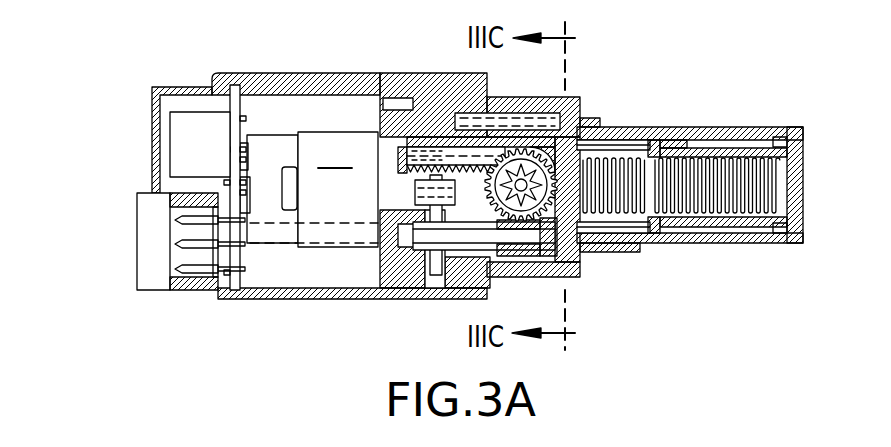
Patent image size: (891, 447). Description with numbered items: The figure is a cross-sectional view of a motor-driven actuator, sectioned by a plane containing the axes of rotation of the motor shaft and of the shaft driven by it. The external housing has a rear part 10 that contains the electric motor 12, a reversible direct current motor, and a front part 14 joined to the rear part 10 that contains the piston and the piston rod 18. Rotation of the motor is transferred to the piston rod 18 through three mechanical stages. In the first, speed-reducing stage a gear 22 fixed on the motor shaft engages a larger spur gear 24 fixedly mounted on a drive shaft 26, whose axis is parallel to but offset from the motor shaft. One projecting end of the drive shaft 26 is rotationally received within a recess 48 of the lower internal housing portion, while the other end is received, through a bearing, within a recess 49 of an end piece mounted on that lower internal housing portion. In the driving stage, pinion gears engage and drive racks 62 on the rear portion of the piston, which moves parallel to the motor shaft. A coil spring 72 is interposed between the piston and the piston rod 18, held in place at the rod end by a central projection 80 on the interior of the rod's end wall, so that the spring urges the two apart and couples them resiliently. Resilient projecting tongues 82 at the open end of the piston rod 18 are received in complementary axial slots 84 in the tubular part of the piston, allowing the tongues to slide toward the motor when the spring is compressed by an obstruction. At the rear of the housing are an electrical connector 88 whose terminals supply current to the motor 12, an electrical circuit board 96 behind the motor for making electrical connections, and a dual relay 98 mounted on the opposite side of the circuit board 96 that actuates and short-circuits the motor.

The rear part of the external housing 10 is at (270, 300).
The electric motor 12 is at (309, 189).
The front part of the external housing 14 is at (717, 245).
The piston rod 18 is at (773, 150).
The gear 22 is at (415, 198).
The spur gear 24 is at (437, 270).
The drive shaft 26 is at (473, 242).
The recess 48 is at (413, 232).
The recess 49 is at (547, 250).
The rack 62 is at (460, 152).
The coil spring 72 is at (618, 172).
The central projection 80 is at (783, 190).
The resilient projecting tongue 82 is at (660, 150).
The slot 84 is at (640, 143).
The electrical connector 88 is at (150, 217).
The electrical circuit board 96 is at (237, 103).
The dual relay 98 is at (183, 133).